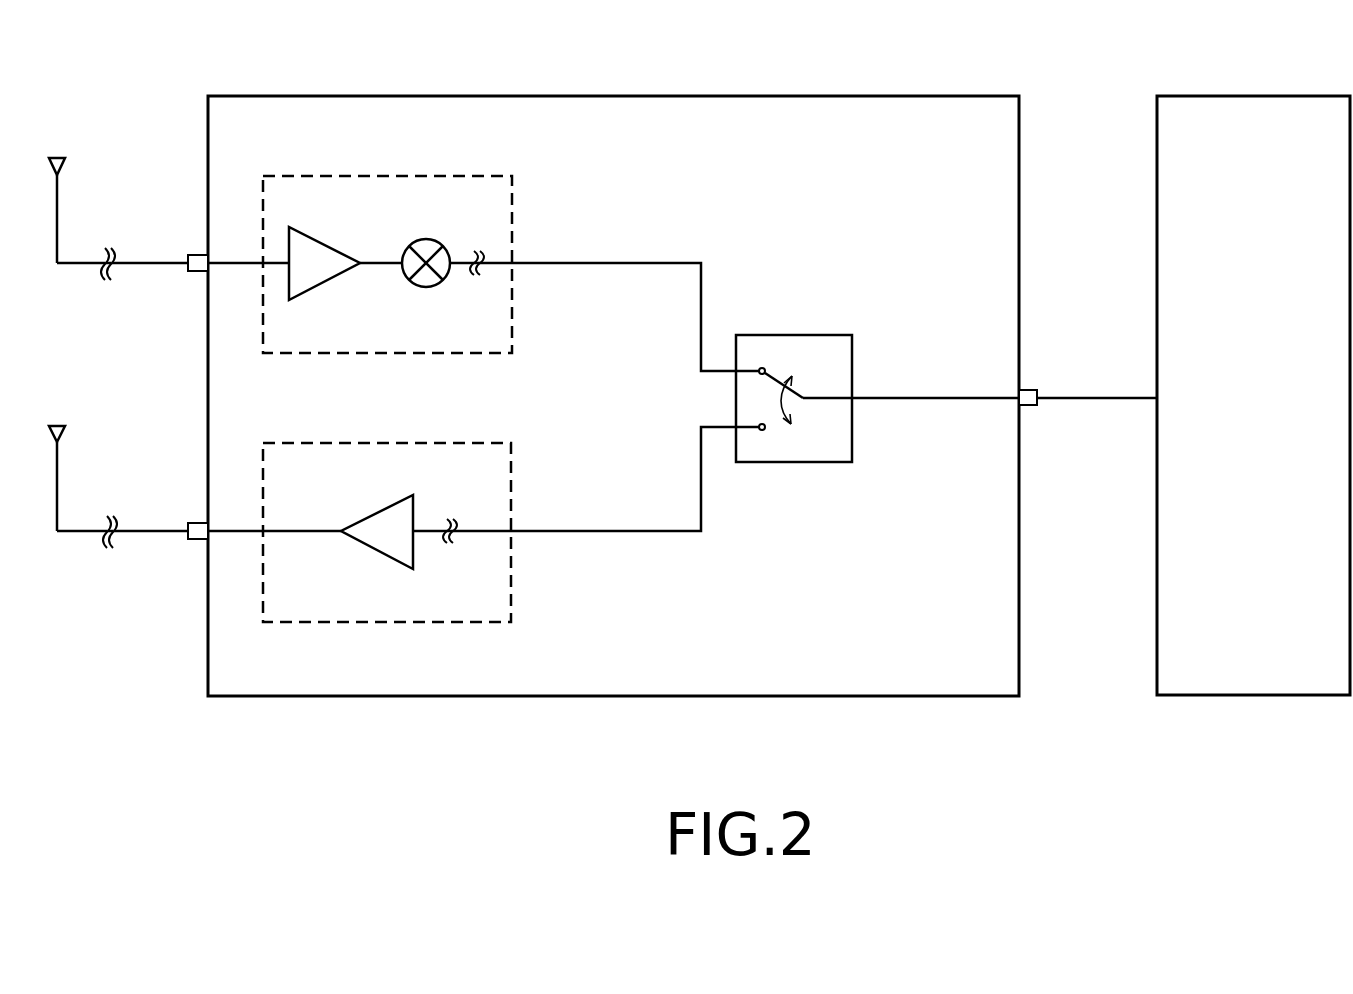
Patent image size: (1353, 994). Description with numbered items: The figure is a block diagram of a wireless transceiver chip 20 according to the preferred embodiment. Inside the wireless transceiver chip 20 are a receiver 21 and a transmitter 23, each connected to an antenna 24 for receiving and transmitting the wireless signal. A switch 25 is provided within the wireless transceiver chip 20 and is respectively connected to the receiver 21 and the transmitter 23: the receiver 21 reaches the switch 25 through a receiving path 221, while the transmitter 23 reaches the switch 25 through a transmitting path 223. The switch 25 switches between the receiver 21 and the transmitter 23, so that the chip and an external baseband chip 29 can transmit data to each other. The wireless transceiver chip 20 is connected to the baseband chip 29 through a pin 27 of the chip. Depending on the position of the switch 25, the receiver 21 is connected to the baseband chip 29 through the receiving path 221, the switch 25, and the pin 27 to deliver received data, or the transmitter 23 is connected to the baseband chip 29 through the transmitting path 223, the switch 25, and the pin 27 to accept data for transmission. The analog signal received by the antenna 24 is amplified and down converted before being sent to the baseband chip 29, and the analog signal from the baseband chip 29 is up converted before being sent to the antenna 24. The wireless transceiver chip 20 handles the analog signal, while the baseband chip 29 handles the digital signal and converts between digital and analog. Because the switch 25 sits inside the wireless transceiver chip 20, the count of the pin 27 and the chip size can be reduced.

The wireless transceiver chip 20 is at (622, 96).
The receiver 21 is at (405, 183).
The transmitter 23 is at (405, 452).
The antenna 24 is at (81, 147).
The switch 25 is at (822, 343).
The pin 27 is at (1030, 390).
The baseband chip 29 is at (1265, 414).
The receiving path 221 is at (612, 263).
The transmitting path 223 is at (612, 533).